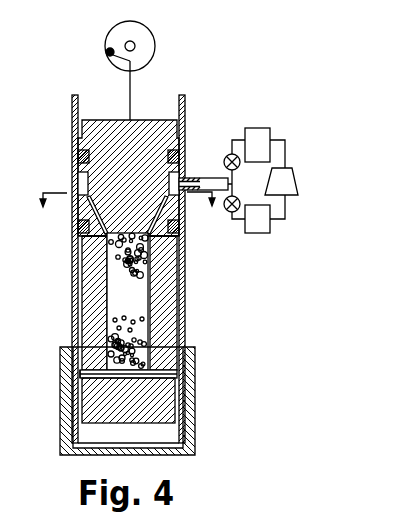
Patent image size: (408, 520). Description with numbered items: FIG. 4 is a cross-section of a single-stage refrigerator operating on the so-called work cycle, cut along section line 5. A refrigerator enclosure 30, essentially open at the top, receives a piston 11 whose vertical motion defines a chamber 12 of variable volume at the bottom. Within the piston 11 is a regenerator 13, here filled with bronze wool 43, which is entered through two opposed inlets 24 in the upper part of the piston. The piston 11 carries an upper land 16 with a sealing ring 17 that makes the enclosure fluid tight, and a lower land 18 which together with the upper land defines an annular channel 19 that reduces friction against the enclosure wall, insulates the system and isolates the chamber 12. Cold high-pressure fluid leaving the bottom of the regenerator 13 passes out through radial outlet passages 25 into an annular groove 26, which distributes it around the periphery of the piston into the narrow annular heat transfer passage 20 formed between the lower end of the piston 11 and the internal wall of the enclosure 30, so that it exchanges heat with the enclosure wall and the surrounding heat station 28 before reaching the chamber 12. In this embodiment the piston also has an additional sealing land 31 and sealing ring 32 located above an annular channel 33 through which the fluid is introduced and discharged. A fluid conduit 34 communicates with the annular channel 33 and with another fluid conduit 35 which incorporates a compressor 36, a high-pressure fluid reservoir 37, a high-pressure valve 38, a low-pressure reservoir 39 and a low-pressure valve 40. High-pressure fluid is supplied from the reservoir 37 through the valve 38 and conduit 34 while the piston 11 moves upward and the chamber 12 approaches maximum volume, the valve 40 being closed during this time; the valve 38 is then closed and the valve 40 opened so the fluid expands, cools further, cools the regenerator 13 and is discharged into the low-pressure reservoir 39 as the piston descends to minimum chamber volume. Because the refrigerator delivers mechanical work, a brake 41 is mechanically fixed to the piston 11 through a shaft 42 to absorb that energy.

The brake 41 is at (145, 40).
The shaft 42 is at (131, 99).
The sealing land 31 is at (180, 137).
The sealing ring 32 is at (180, 157).
The annular channel 33 is at (83, 183).
The fluid conduit 34 is at (190, 179).
The section line 5 is at (129, 210).
The inlet conduits 24 is at (73, 211).
The piston 11 is at (93, 236).
The sealing ring 17 is at (181, 230).
The land 16 is at (180, 246).
The regenerator 13 is at (107, 286).
The bronze wool 43 is at (131, 279).
The annular channel 19 is at (176, 289).
The refrigerator enclosure 30 is at (181, 308).
The lower land 18 is at (185, 349).
The heat station 28 is at (186, 380).
The annular groove 26 is at (82, 371).
The radial outlet passages 25 is at (110, 375).
The annular heat transfer passage 20 is at (172, 412).
The chamber 12 is at (132, 446).
The high-pressure fluid reservoir 37 is at (259, 133).
The high-pressure valve 38 is at (238, 168).
The compressor 36 is at (288, 182).
The fluid conduit 35 is at (276, 222).
The low-pressure reservoir 39 is at (258, 234).
The low-pressure valve 40 is at (232, 213).